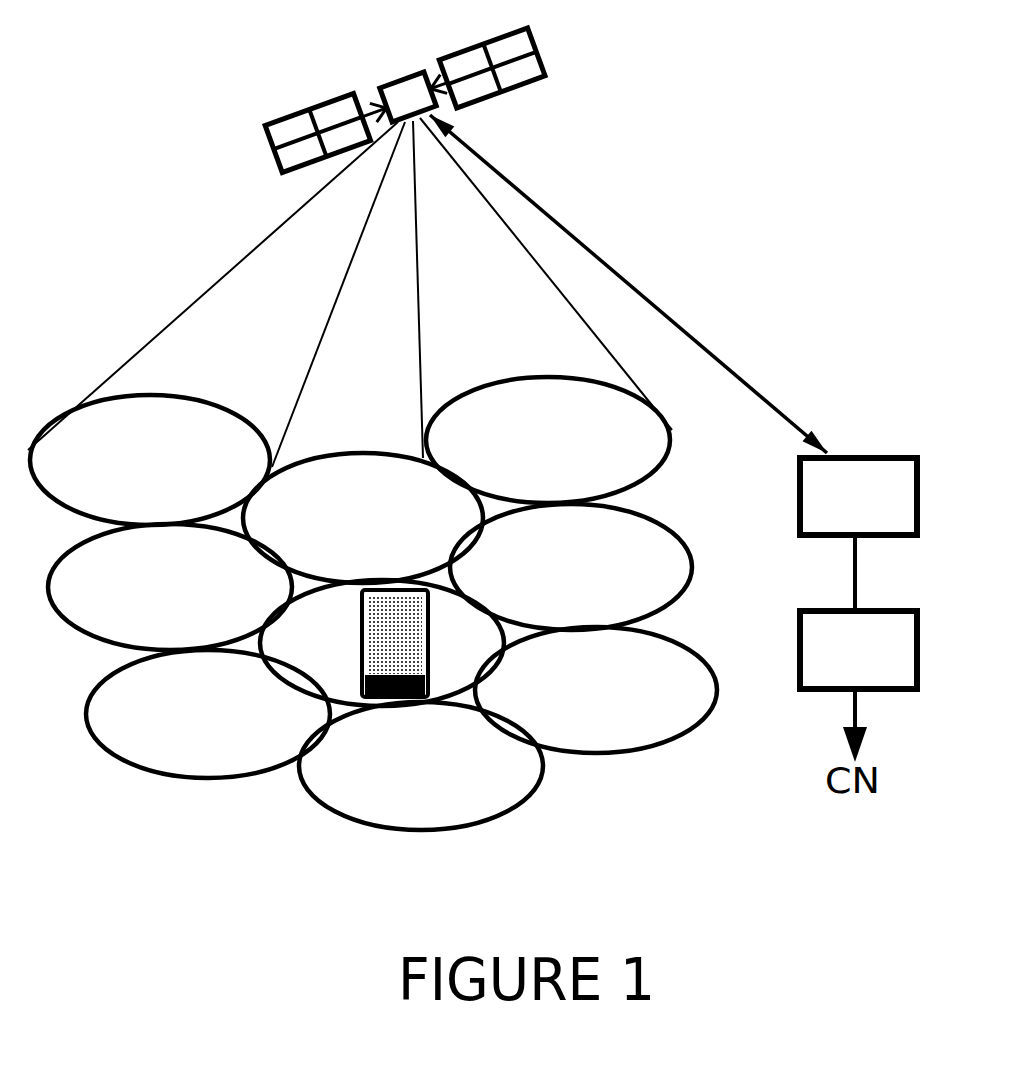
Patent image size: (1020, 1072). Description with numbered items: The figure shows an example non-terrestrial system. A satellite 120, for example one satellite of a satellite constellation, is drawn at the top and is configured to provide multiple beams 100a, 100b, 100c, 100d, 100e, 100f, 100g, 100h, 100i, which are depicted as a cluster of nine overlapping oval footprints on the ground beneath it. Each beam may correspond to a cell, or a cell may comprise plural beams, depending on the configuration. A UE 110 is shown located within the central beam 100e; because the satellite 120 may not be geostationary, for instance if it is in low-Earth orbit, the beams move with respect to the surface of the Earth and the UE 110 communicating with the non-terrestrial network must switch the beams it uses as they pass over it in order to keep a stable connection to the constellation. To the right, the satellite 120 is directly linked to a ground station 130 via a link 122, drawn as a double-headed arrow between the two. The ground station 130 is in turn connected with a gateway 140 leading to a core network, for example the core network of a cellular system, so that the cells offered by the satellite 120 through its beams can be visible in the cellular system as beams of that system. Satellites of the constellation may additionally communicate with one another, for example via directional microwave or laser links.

The beam 100a is at (150, 460).
The beam 100b is at (170, 587).
The beam 100c is at (208, 714).
The beam 100d is at (363, 518).
The beam 100e is at (382, 643).
The beam 100f is at (421, 766).
The beam 100g is at (548, 440).
The beam 100h is at (571, 567).
The beam 100i is at (596, 690).
The UE 110 is at (377, 697).
The satellite 120 is at (398, 82).
The link 122 is at (645, 295).
The ground station 130 is at (858, 496).
The gateway 140 is at (858, 650).